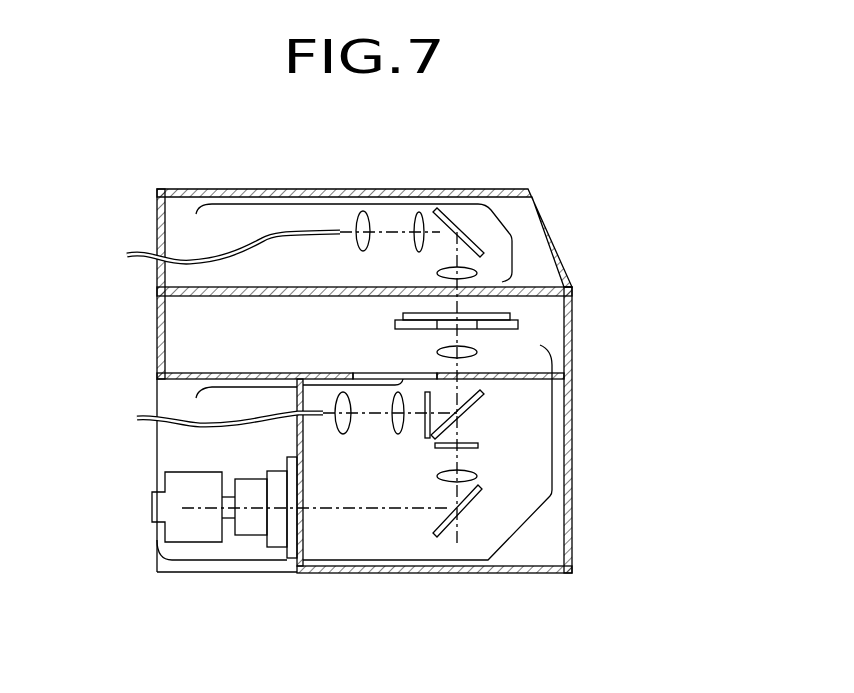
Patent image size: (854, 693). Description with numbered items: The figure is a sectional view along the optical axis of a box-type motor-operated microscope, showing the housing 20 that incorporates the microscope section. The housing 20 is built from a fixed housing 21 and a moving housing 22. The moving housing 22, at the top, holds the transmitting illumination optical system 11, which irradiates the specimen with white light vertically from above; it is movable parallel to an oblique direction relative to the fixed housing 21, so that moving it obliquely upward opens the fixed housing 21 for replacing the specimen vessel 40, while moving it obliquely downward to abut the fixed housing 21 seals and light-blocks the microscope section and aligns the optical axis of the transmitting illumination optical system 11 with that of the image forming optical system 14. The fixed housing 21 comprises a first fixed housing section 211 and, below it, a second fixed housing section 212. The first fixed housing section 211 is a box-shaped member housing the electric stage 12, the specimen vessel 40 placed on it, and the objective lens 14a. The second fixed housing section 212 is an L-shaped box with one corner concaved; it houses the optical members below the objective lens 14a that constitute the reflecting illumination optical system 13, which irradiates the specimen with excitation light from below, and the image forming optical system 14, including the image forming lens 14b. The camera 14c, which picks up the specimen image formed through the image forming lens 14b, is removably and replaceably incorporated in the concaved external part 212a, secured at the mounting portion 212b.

The transmitting illumination optical system 11 is at (367, 203).
The electric stage 12 is at (500, 330).
The reflecting illumination optical system 13 is at (461, 382).
The image forming optical system 14 is at (430, 469).
The objective lens 14a is at (470, 357).
The image forming lens 14b is at (437, 477).
The camera 14c is at (197, 528).
The housing 20 is at (700, 190).
The fixed housing 21 is at (368, 456).
The first fixed housing section 211 is at (404, 358).
The second fixed housing section 212 is at (344, 502).
The external part 212a is at (200, 446).
The mounting portion 212b is at (279, 538).
The moving housing 22 is at (384, 211).
The specimen vessel 40 is at (403, 316).